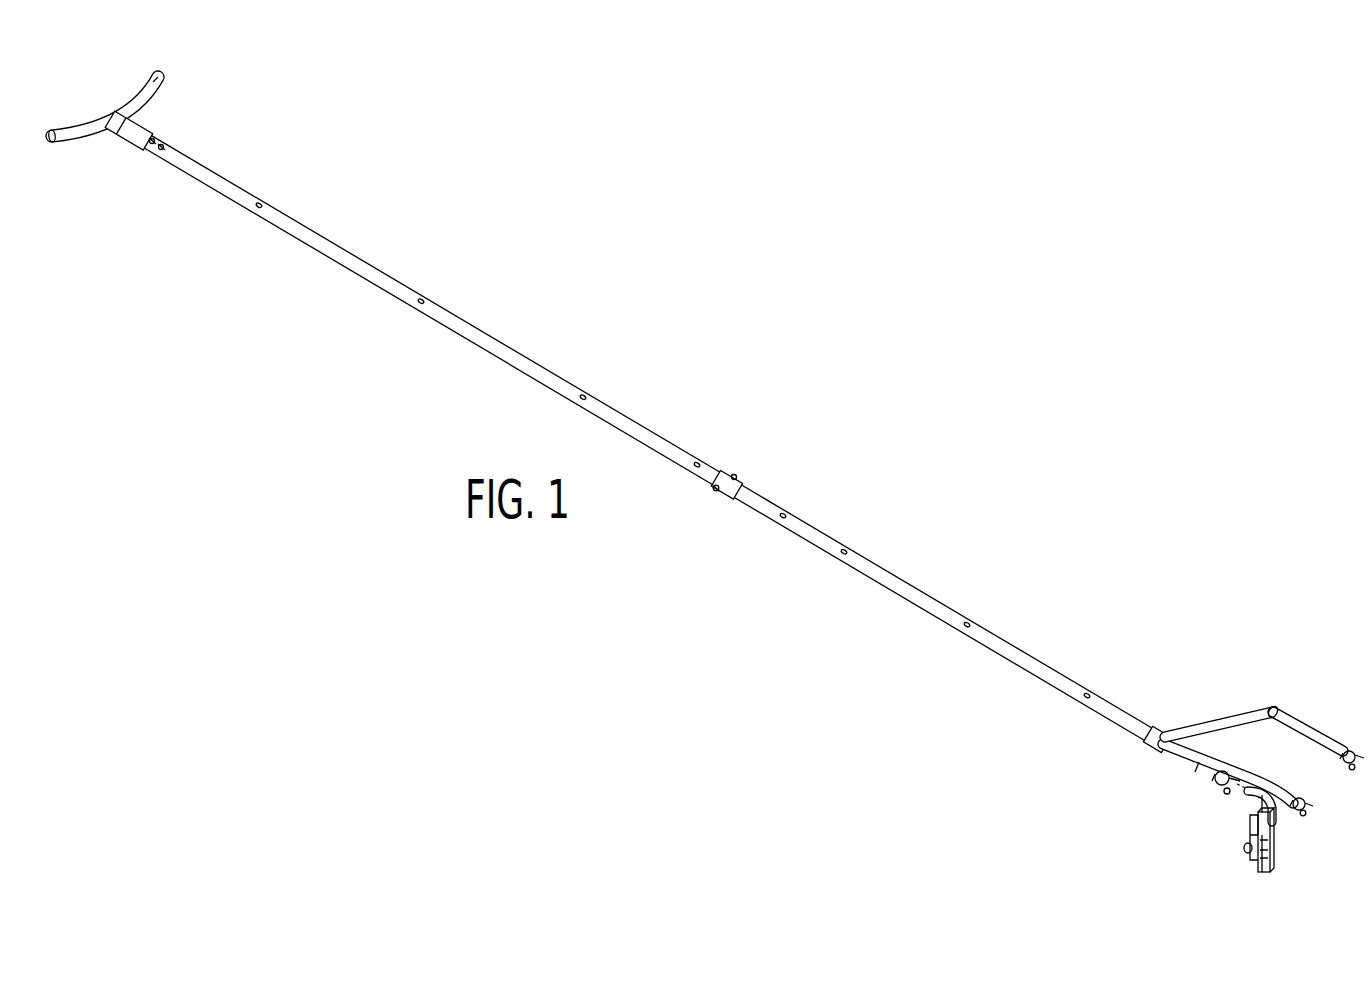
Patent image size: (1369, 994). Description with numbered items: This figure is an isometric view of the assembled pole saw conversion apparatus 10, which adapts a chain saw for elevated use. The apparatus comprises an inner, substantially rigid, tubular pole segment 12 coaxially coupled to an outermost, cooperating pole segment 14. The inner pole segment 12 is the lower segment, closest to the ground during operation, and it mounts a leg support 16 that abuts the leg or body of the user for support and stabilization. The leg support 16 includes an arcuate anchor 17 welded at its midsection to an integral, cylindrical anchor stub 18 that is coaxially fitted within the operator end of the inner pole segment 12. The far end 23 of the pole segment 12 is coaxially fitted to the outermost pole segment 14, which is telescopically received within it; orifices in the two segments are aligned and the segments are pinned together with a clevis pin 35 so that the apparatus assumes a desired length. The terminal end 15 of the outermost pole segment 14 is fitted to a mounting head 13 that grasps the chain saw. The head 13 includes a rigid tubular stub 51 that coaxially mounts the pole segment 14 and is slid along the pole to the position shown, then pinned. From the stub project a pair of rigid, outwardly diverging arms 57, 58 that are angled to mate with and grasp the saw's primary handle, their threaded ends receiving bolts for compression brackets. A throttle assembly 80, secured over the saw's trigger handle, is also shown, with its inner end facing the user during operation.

The pole saw conversion apparatus 10 is at (746, 368).
The inner tubular pole segment 12 is at (316, 233).
The mounting head 13 is at (1282, 708).
The outermost pole segment 14 is at (905, 595).
The terminal end 15 is at (1120, 732).
The leg support 16 is at (98, 141).
The arcuate anchor 17 is at (156, 84).
The anchor stub 18 is at (113, 119).
The far end 23 is at (729, 477).
The clevis pin 35 is at (717, 491).
The tubular stub 51 is at (1176, 760).
The projecting arm 57 is at (1313, 728).
The projecting arm 58 is at (1237, 757).
The throttle assembly 80 is at (1234, 859).